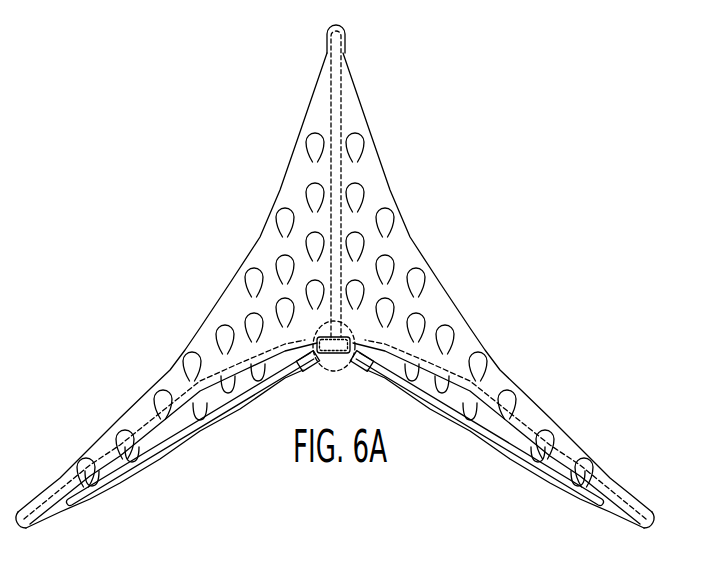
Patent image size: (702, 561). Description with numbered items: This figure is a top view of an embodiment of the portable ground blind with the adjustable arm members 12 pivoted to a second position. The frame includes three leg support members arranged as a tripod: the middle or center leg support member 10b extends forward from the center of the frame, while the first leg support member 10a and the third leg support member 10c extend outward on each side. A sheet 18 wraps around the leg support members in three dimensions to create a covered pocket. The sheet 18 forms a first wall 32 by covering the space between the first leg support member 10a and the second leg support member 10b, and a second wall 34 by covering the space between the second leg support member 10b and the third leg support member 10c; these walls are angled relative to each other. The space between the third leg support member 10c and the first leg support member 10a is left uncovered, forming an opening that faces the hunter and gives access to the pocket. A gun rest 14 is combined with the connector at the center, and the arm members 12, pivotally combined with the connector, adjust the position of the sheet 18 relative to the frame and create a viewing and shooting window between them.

The first leg support member 10a is at (132, 463).
The second leg support member 10b is at (328, 52).
The third leg support member 10c is at (551, 466).
The adjustable arm member 12 is at (180, 393).
The gun rest 14 is at (340, 343).
The sheet 18 is at (451, 303).
The first wall 32 is at (266, 250).
The second wall 34 is at (377, 197).